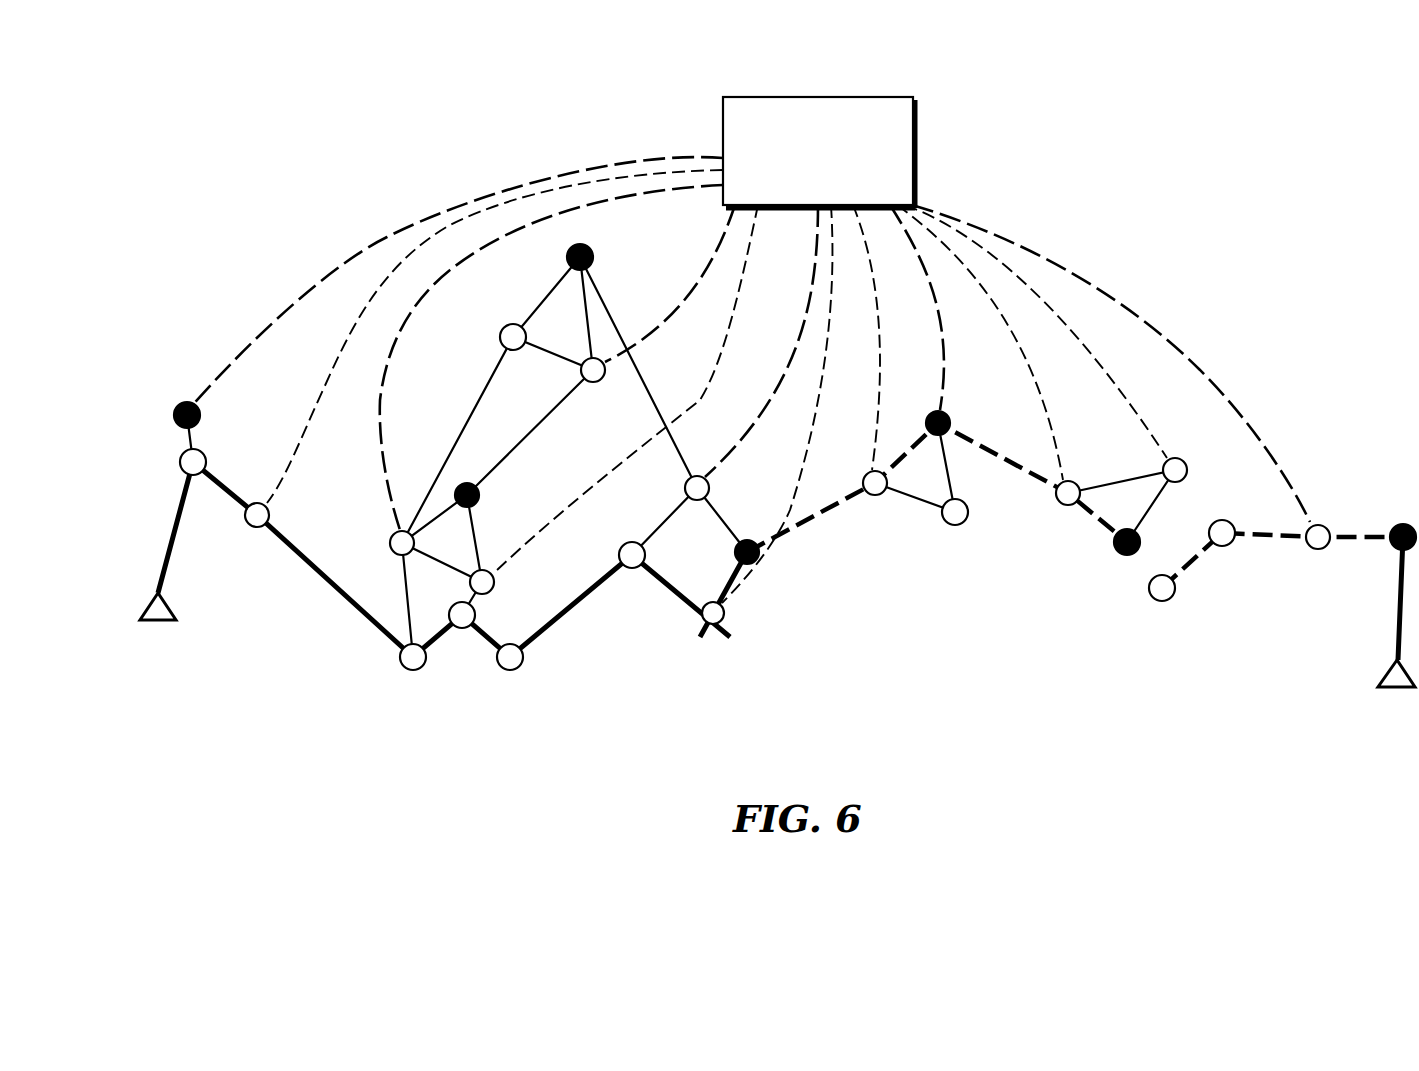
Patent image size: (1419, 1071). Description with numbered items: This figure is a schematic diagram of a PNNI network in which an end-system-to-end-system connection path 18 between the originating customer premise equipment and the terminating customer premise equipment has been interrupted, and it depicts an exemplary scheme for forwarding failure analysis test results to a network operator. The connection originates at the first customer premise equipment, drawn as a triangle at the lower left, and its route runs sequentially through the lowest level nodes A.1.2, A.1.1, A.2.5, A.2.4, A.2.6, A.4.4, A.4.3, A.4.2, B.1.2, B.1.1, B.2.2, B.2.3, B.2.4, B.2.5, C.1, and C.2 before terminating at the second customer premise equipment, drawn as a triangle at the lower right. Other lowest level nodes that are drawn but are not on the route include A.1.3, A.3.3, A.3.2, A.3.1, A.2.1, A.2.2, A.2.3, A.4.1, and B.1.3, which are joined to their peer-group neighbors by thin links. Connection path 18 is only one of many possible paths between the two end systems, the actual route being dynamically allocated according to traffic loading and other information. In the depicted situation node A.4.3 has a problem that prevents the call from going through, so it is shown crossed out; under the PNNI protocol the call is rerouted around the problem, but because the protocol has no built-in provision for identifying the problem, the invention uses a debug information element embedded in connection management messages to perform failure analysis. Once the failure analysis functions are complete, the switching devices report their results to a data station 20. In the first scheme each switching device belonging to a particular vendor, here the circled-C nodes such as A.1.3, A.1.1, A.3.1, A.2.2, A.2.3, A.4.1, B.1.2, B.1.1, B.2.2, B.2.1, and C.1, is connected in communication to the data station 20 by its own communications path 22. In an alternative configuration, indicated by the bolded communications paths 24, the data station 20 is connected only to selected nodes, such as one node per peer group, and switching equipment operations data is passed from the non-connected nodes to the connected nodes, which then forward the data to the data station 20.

The data station 20 is at (914, 150).
The communications path 22 is at (410, 253).
The bolded communications path 24 is at (1155, 330).
The connection path 18 is at (572, 610).
The lowest level node A.1.3 is at (200, 410).
The lowest level node A.1.2 is at (206, 458).
The lowest level node A.1.1 is at (245, 516).
The lowest level node A.3.3 is at (568, 255).
The lowest level node A.3.2 is at (558, 322).
The lowest level node A.3.1 is at (581, 372).
The lowest level node A.2.1 is at (478, 493).
The lowest level node A.2.2 is at (414, 540).
The lowest level node A.2.3 is at (470, 582).
The lowest level node A.2.4 is at (475, 615).
The lowest level node A.2.5 is at (460, 672).
The lowest level node A.2.6 is at (500, 668).
The lowest level node A.4.1 is at (710, 490).
The lowest level node A.4.4 is at (645, 557).
The lowest level node A.4.2 is at (758, 558).
The lowest level node A.4.3 is at (725, 612).
The lowest level node B.1.1 is at (950, 417).
The lowest level node B.1.2 is at (917, 470).
The lowest level node B.1.3 is at (945, 523).
The lowest level node B.2.1 is at (1162, 467).
The lowest level node B.2.2 is at (1080, 500).
The lowest level node B.2.3 is at (1113, 545).
The lowest level node B.2.4 is at (1150, 592).
The lowest level node B.2.5 is at (1212, 527).
The lowest level node C.1 is at (1325, 547).
The lowest level node C.2 is at (1393, 525).